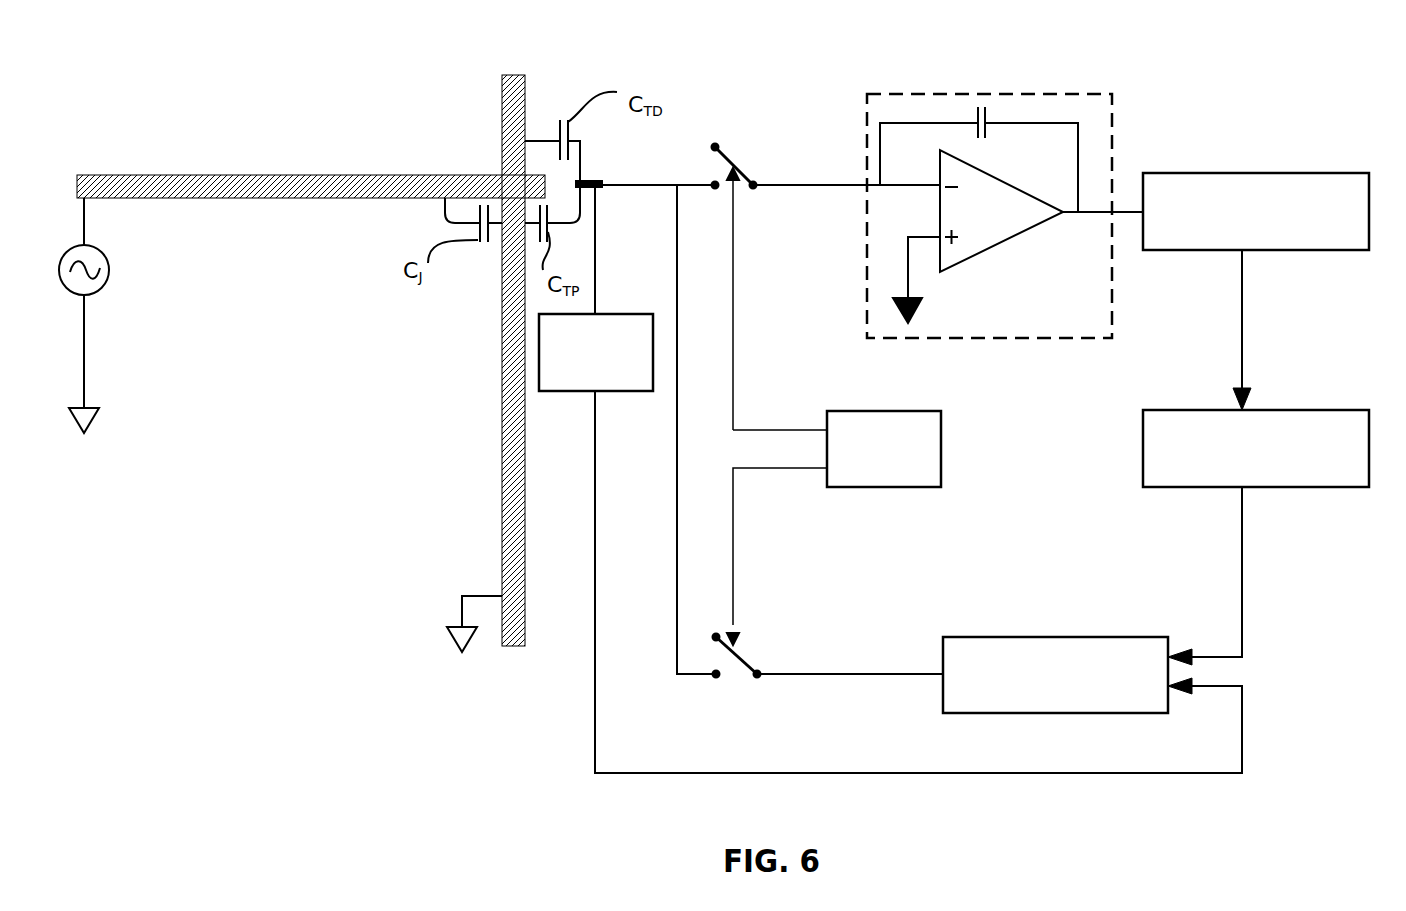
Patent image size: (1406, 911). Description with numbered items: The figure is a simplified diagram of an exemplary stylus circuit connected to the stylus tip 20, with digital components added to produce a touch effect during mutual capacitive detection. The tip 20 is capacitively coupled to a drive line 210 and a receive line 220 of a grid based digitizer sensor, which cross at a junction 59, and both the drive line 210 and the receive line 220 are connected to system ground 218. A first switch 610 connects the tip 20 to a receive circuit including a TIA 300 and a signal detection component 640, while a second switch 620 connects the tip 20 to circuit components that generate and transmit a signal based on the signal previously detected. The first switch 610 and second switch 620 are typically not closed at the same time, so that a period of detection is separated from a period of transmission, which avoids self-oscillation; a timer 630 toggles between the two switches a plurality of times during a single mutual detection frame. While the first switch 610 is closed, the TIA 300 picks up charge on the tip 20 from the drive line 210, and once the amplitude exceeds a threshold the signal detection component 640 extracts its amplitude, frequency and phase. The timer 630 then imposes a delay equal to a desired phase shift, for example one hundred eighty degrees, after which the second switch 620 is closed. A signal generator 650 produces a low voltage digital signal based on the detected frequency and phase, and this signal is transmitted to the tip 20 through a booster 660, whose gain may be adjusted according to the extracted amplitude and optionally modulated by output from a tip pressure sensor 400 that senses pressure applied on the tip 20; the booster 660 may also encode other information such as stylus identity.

The tip 20 is at (590, 180).
The junction 59 is at (520, 178).
The drive line 210 is at (292, 185).
The system ground 218 is at (85, 338).
The receive line 220 is at (502, 435).
The TIA 300 is at (920, 95).
The tip pressure sensor 400 is at (630, 391).
The first switch 610 is at (735, 158).
The second switch 620 is at (742, 660).
The timer 630 is at (941, 455).
The signal detection component 640 is at (1290, 173).
The signal generator 650 is at (1298, 410).
The booster 660 is at (1035, 637).